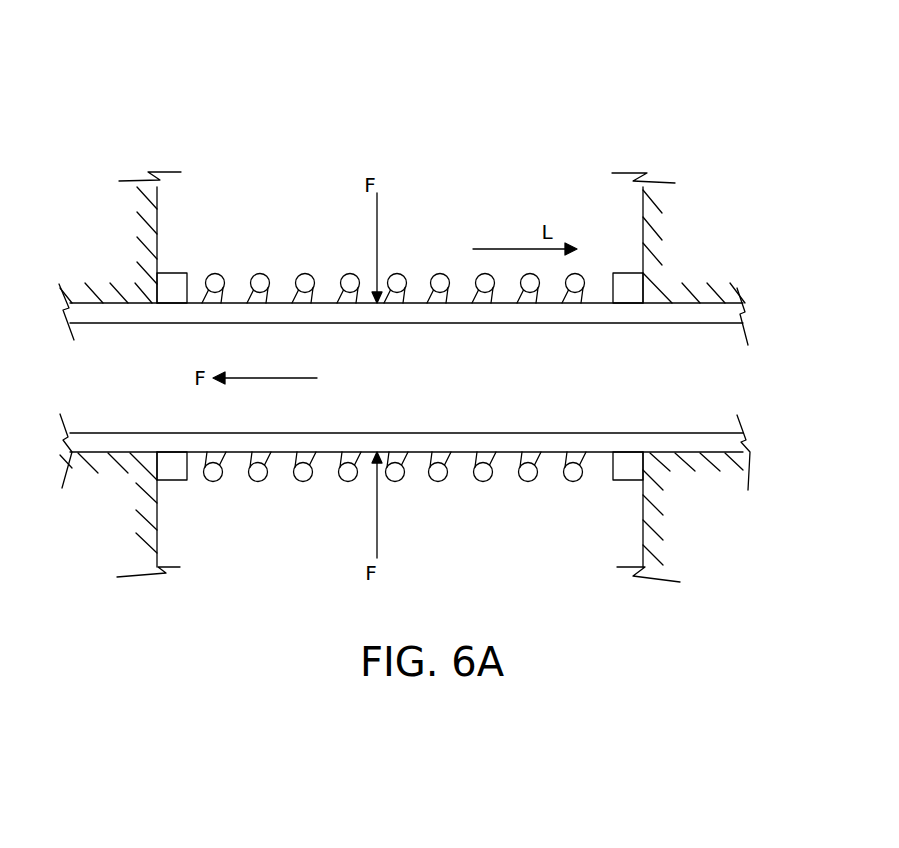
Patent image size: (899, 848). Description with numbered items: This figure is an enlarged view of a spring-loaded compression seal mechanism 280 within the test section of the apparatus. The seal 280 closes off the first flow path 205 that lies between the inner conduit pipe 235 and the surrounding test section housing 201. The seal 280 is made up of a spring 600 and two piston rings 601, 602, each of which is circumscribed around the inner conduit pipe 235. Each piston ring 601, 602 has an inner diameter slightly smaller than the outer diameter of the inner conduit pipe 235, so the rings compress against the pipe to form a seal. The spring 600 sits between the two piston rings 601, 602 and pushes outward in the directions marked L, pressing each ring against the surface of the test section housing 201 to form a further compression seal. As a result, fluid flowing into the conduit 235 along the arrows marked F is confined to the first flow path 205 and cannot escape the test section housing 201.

The test section housing 201 is at (102, 294).
The inner conduit pipe 235 is at (745, 308).
The first flow path 205 is at (383, 385).
The seal mechanism 280 is at (413, 200).
The spring 600 is at (304, 273).
The piston ring 601 is at (180, 272).
The piston ring 602 is at (620, 273).